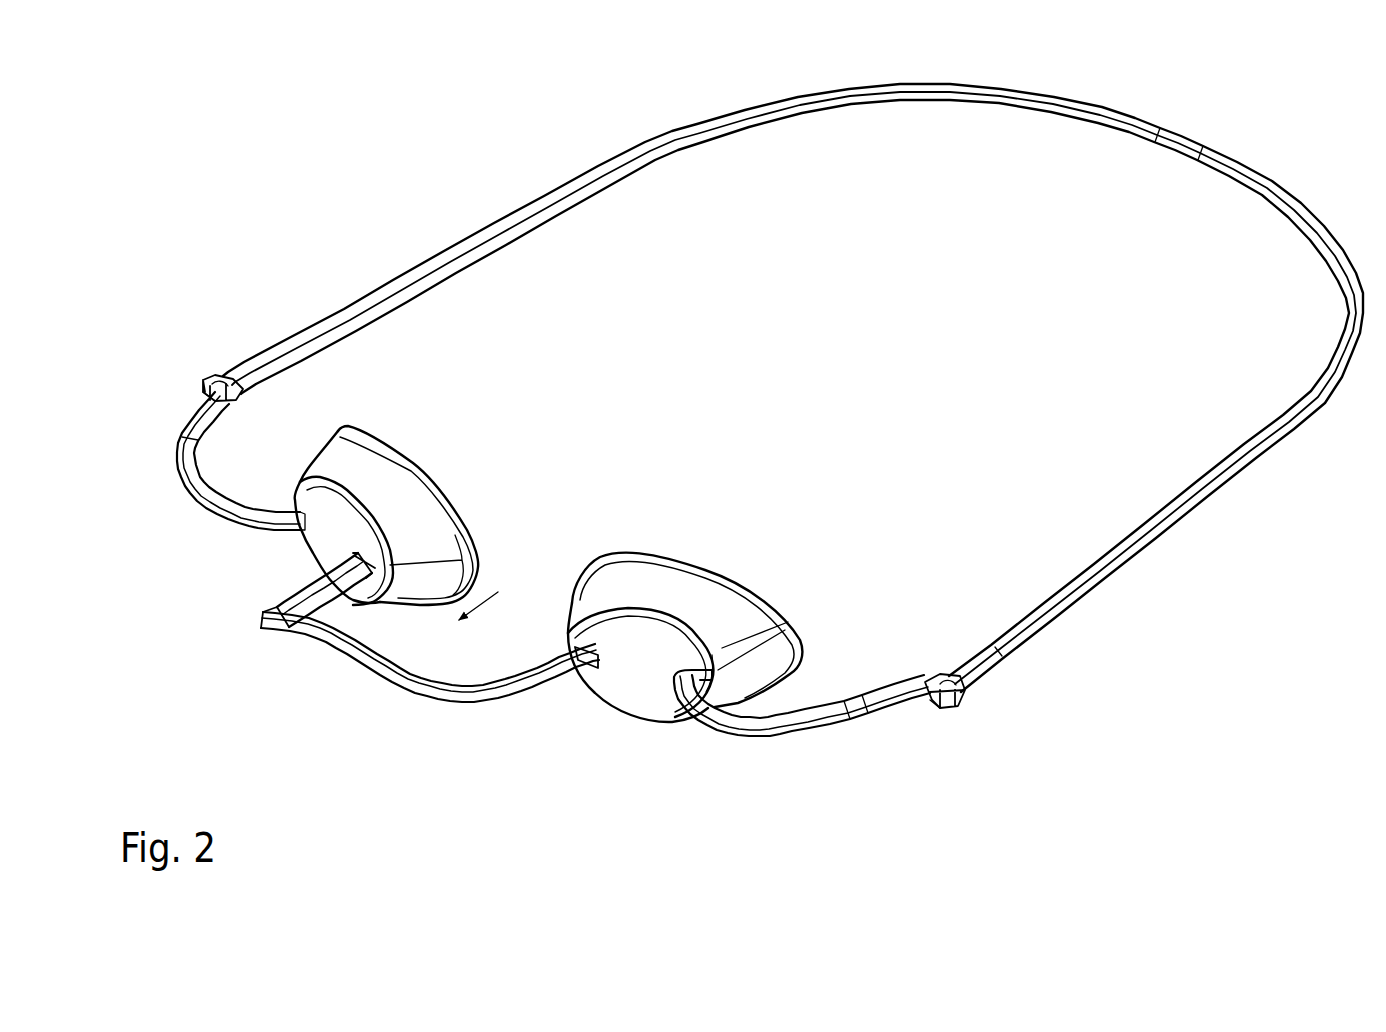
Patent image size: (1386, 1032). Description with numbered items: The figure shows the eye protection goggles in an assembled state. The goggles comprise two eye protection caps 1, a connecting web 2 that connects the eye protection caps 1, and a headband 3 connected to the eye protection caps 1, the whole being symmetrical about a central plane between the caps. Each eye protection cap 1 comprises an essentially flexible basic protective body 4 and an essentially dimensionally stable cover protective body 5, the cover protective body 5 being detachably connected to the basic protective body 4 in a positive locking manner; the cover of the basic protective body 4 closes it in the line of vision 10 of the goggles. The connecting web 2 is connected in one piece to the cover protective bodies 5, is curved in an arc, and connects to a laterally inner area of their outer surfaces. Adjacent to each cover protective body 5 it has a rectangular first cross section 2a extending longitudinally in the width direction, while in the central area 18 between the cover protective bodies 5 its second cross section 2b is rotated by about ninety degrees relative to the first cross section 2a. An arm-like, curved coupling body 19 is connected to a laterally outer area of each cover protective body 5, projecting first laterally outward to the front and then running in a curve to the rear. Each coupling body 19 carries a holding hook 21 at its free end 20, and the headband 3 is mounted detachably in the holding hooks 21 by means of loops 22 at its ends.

The eye protection cap 1 is at (527, 524).
The connecting web 2 is at (387, 671).
The first cross section 2a is at (356, 565).
The second cross section 2b is at (300, 625).
The headband 3 is at (466, 235).
The basic protective body 4 is at (323, 453).
The cover protective body 5 is at (296, 548).
The line of vision 10 is at (478, 608).
The central area 18 is at (330, 633).
The coupling body 19 is at (211, 516).
The free end 20 is at (228, 385).
The holding hook 21 is at (204, 383).
The loop 22 is at (216, 391).